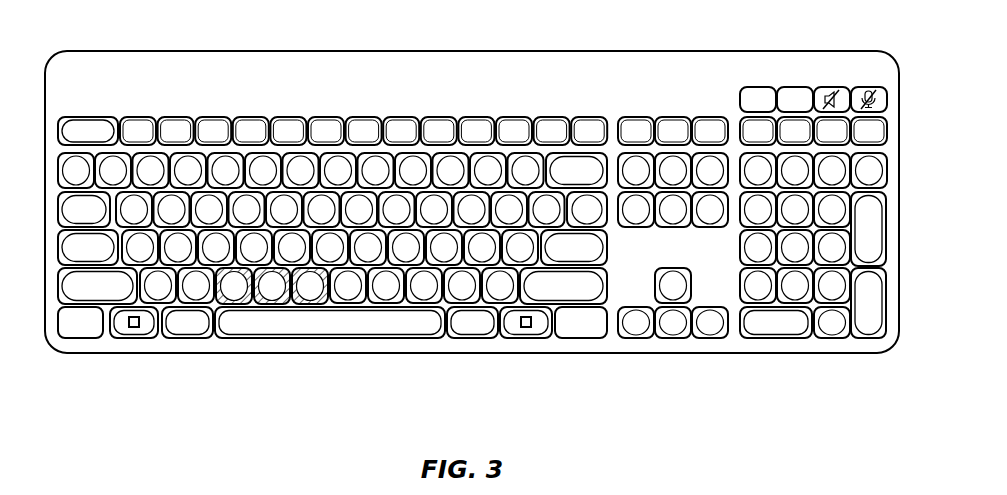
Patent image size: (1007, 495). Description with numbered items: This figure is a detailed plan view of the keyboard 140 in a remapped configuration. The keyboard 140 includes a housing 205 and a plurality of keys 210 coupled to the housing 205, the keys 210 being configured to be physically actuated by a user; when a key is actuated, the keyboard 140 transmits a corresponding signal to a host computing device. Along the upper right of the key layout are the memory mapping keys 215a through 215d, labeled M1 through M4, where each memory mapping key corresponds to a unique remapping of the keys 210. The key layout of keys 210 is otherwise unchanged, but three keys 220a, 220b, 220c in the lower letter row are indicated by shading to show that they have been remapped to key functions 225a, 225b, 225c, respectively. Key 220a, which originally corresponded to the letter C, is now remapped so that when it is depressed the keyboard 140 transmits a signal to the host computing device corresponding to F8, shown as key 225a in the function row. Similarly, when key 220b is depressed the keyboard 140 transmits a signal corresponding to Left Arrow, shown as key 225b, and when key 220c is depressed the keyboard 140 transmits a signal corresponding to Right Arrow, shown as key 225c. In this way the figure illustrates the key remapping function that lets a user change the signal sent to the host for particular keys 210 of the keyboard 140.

The keyboard 140 is at (535, 51).
The housing 205 is at (310, 65).
The keys 210 is at (88, 118).
The memory mapping key 215a is at (740, 120).
The memory mapping key 215d is at (887, 120).
The remapped key 220a is at (228, 306).
The remapped key 220b is at (285, 306).
The remapped key 220c is at (322, 306).
The key function 225a is at (415, 122).
The key function 225b is at (625, 338).
The key function 225c is at (723, 338).